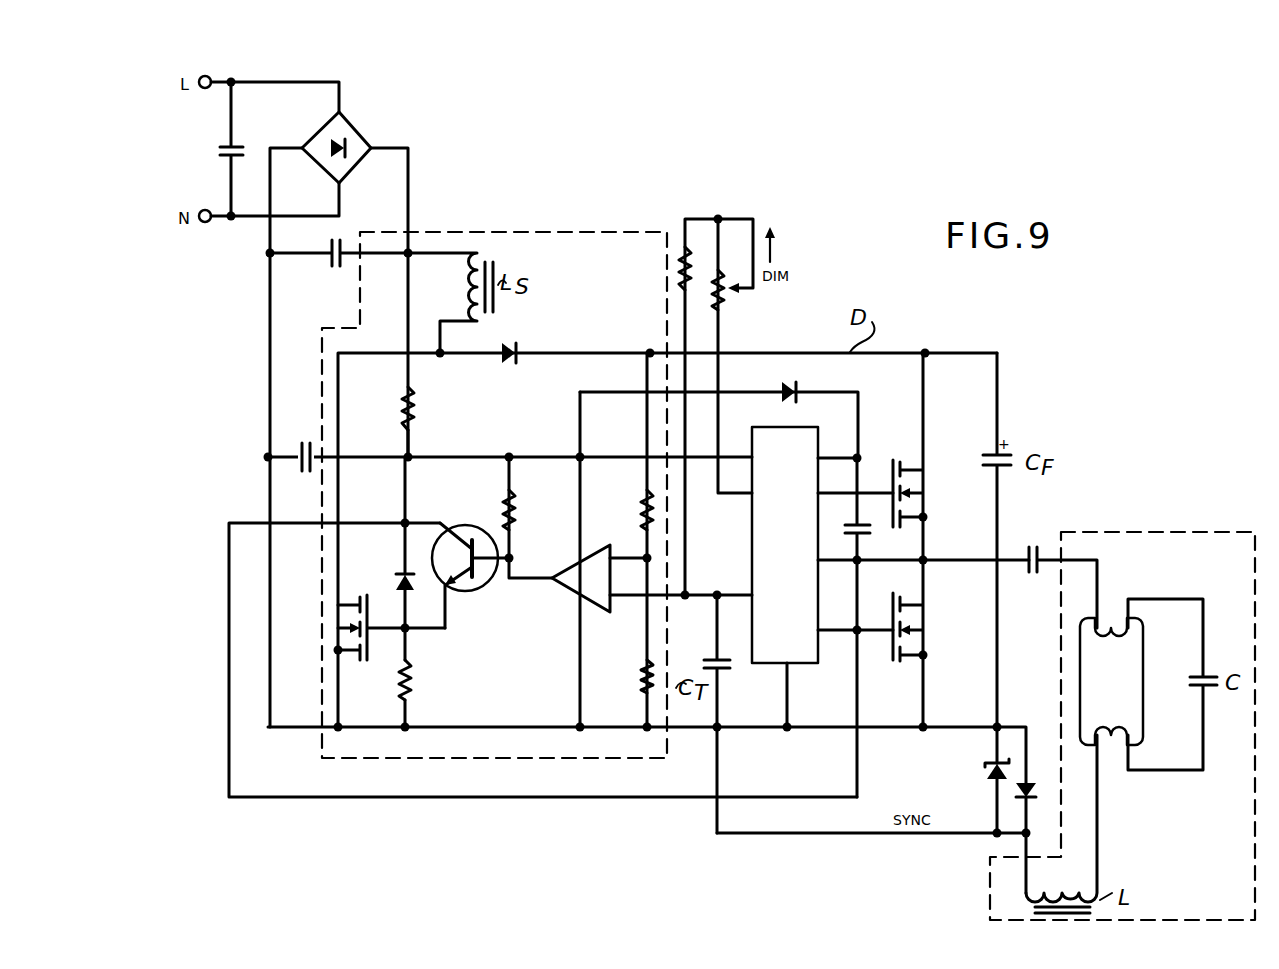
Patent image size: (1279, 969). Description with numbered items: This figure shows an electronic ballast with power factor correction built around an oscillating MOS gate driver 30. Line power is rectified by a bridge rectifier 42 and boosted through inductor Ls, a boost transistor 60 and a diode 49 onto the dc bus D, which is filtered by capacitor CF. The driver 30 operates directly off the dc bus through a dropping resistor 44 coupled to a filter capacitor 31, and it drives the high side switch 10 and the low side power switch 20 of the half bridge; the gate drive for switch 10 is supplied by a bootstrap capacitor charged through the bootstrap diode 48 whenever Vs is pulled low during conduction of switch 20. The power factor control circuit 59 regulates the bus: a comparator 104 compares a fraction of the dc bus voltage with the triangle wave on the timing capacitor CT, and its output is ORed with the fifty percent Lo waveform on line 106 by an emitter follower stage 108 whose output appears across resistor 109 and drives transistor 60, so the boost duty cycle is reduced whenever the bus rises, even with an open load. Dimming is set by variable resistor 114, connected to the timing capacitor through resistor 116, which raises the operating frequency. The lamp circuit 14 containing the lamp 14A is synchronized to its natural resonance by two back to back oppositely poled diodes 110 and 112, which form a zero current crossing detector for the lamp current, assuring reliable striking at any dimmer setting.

The bridge rectifier 42 is at (362, 128).
The power factor control circuit 59 is at (557, 200).
The resistor 116 is at (680, 268).
The variable resistor 114 is at (735, 297).
The bootstrap diode 48 is at (778, 386).
The diode 49 is at (502, 362).
The dropping resistor 44 is at (420, 405).
The high side switch 10 is at (930, 478).
The low side power switch 20 is at (928, 615).
The filter capacitor 31 is at (300, 466).
The line 106 is at (229, 560).
The emitter follower stage 108 is at (454, 602).
The comparator 104 is at (560, 590).
The boost transistor 60 is at (344, 664).
The resistor 109 is at (418, 682).
The MOS gate driver 30 is at (765, 666).
The lamp circuit 14 is at (1172, 508).
The lamp 14A is at (1148, 662).
The diode 110 is at (983, 770).
The diode 112 is at (1016, 786).